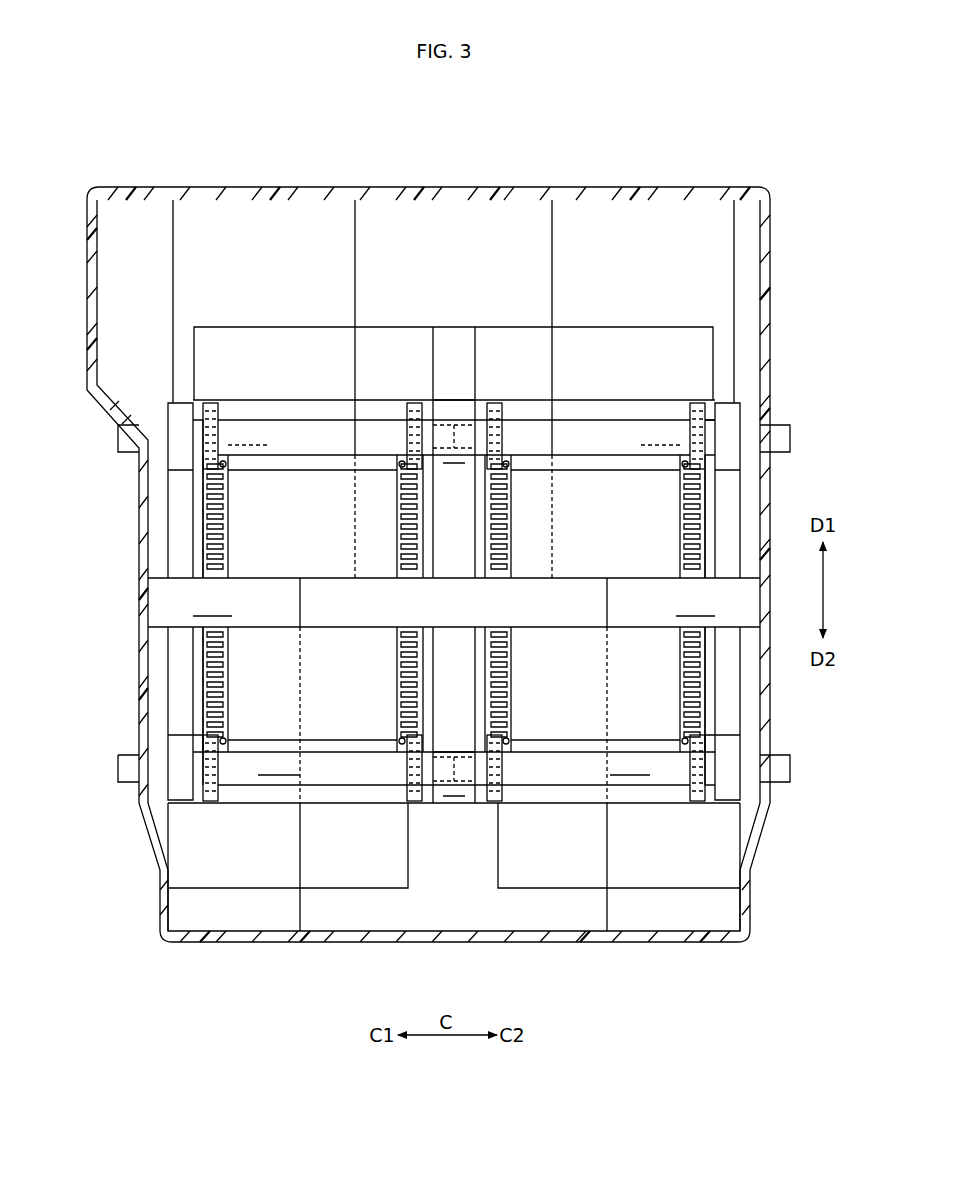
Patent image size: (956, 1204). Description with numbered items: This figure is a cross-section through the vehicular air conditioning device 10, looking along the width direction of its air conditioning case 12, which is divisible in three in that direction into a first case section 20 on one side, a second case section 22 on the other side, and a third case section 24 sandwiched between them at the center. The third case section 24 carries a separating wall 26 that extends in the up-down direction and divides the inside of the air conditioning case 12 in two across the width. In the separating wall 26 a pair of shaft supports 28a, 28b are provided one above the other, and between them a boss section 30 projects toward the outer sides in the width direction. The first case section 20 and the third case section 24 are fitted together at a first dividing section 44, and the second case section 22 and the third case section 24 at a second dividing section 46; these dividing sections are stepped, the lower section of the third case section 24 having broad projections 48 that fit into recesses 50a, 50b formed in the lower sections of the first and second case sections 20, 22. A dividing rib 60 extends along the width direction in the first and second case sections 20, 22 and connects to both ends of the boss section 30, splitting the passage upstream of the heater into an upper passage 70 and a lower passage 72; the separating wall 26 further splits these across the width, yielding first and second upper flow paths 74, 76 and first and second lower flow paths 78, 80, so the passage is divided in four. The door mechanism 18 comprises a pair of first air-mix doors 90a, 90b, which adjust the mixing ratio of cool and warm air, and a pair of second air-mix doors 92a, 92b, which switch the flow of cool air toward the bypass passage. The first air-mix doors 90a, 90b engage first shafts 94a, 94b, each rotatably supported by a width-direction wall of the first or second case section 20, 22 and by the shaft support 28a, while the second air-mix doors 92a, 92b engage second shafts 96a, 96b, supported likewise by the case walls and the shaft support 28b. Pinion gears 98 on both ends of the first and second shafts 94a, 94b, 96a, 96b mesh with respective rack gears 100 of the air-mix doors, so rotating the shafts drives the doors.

The vehicular air conditioning device 10 is at (494, 112).
The air conditioning case 12 is at (130, 892).
The door mechanism 18 is at (180, 543).
The first case section 20 is at (242, 186).
The second case section 22 is at (637, 186).
The third case section 24 is at (430, 186).
The separating wall 26 is at (455, 556).
The shaft support 28a is at (454, 415).
The shaft support 28b is at (454, 795).
The boss section 30 is at (353, 605).
The first dividing section 44 is at (355, 265).
The second dividing section 46 is at (553, 265).
The projection 48 is at (312, 870).
The recess 50a is at (307, 906).
The recess 50b is at (603, 906).
The dividing rib 60 is at (288, 596).
The upper passage 70 is at (245, 497).
The lower passage 72 is at (245, 703).
The first upper flow path 74 is at (303, 448).
The second upper flow path 76 is at (600, 450).
The first lower flow path 78 is at (356, 742).
The second lower flow path 80 is at (551, 742).
The first air-mix door 90a is at (373, 470).
The first air-mix door 90b is at (535, 470).
The second air-mix door 92a is at (252, 736).
The second air-mix door 92b is at (658, 736).
The first shaft 94a is at (277, 444).
The first shaft 94b is at (618, 448).
The second shaft 96a is at (325, 770).
The second shaft 96b is at (581, 770).
The pinion gear 98 is at (209, 405).
The rack gear 100 is at (226, 540).